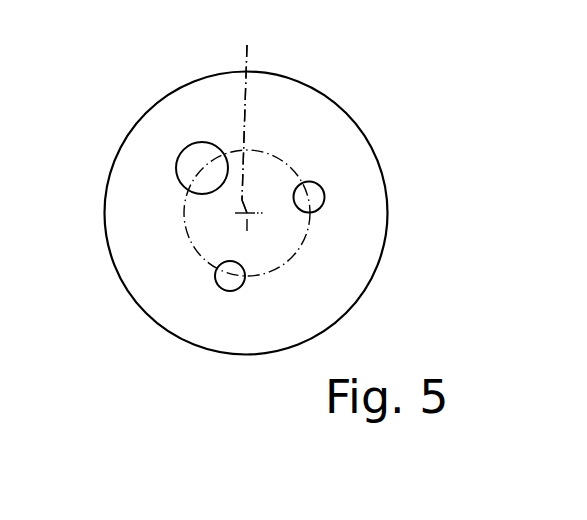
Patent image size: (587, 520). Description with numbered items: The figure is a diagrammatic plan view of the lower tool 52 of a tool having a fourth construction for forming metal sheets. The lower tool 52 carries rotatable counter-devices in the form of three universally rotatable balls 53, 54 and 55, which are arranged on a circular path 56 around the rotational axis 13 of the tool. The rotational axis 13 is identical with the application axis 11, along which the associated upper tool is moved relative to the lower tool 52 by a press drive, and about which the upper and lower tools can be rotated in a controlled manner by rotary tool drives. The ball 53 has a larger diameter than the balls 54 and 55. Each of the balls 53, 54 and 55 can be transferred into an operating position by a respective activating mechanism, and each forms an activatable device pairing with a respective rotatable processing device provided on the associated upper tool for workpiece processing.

The application axis 11 is at (252, 116).
The rotational axis 13 is at (249, 138).
The lower tool 52 is at (385, 277).
The ball 53 is at (192, 158).
The ball 54 is at (218, 287).
The ball 55 is at (323, 195).
The circular path 56 is at (287, 158).